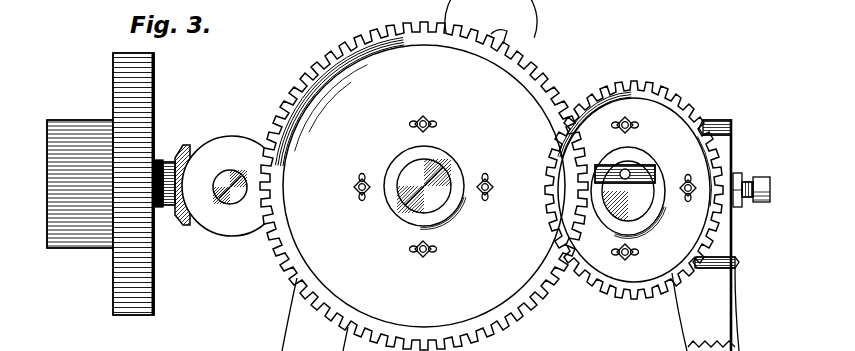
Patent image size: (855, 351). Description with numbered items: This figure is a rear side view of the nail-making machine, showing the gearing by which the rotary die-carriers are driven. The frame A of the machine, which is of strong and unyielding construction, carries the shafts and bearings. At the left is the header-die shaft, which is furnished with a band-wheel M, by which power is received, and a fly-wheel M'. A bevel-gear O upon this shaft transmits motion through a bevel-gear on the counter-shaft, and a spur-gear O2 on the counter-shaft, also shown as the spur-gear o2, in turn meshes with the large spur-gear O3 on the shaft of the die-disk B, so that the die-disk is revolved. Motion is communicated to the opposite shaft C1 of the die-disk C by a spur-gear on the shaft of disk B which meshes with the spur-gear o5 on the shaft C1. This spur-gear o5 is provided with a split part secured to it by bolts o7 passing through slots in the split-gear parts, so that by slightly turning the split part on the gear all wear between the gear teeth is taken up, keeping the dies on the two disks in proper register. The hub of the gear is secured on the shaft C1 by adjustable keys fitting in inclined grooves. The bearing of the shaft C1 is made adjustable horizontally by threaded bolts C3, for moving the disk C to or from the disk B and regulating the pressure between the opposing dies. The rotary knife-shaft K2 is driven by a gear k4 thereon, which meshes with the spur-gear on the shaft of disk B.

The band-wheel M is at (80, 184).
The fly-wheel M' is at (155, 184).
The bevel-gear O is at (187, 146).
The spur-gear O2 is at (230, 198).
The spur-gear O3 is at (424, 186).
The gear k4 is at (491, 32).
The cutter-shaft K2 is at (510, 26).
The spur-gear o5 is at (634, 190).
The shaft C1 is at (631, 180).
The spur-gear o2 is at (600, 262).
The bolts o7 is at (685, 203).
The threaded bolts C3 is at (751, 200).
The frame A is at (743, 248).